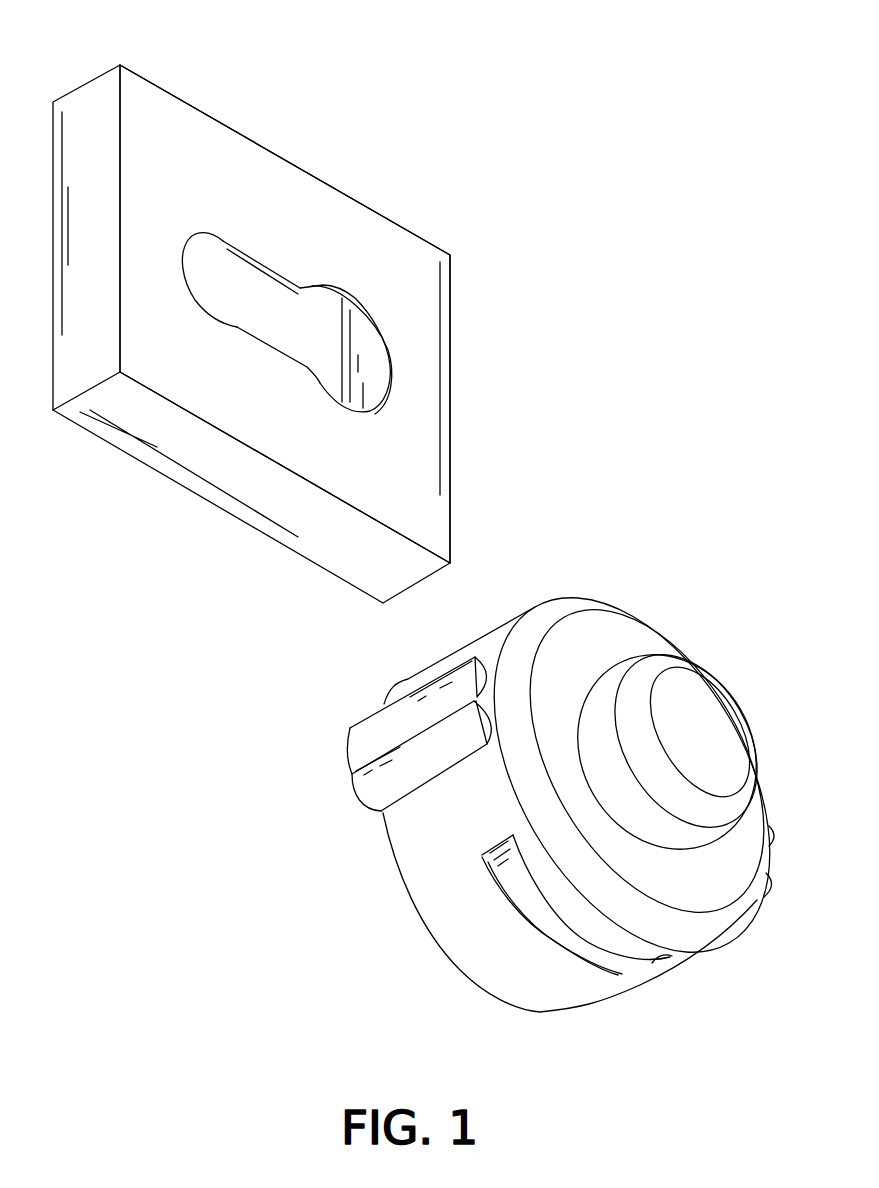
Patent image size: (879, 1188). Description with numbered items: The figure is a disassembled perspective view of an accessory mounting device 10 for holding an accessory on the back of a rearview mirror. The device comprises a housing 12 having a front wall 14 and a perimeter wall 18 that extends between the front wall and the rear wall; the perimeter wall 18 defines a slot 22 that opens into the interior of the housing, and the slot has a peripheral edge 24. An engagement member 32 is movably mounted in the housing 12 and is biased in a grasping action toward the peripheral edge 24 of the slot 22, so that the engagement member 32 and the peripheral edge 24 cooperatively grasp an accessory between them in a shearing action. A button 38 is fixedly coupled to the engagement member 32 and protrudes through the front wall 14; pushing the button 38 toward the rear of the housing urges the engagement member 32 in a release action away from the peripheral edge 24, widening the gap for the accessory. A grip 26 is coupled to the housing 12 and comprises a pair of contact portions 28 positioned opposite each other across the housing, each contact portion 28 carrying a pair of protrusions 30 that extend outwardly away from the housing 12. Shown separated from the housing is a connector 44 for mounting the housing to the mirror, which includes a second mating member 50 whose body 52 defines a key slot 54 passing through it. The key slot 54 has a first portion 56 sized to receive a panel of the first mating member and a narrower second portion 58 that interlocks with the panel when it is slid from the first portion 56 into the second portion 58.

The accessory mounting device 10 is at (577, 165).
The housing 12 is at (392, 903).
The front wall 14 is at (608, 643).
The perimeter wall 18 is at (450, 913).
The slot 22 is at (623, 948).
The peripheral edge 24 is at (597, 930).
The grip 26 is at (343, 775).
The contact portion 28 is at (348, 735).
The protrusions 30 is at (373, 730).
The engagement member 32 is at (550, 908).
The button 38 is at (692, 717).
The connector 44 is at (313, 118).
The second mating member 50 is at (462, 358).
The body 52 is at (362, 243).
The key slot 54 is at (292, 323).
The first portion 56 is at (320, 383).
The second portion 58 is at (215, 277).